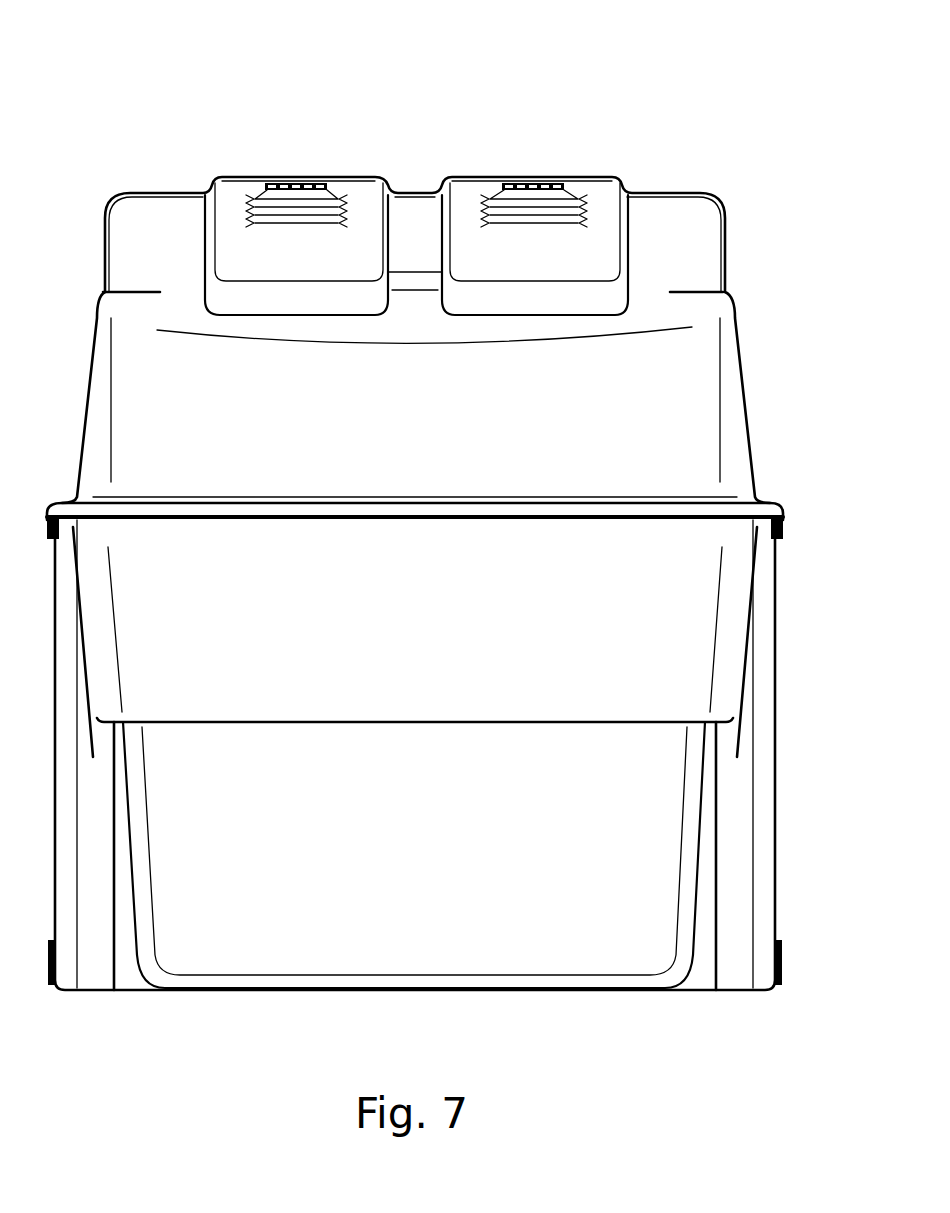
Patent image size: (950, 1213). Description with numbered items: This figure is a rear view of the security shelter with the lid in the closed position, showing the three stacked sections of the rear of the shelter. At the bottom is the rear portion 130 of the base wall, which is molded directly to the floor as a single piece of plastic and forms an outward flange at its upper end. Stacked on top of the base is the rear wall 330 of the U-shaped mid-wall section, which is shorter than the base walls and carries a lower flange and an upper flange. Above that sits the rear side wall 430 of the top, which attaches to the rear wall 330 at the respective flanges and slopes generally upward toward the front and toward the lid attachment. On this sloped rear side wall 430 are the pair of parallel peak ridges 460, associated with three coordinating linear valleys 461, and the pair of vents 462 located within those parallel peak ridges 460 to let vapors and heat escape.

The rear portion of the base wall 130 is at (375, 872).
The rear wall of the mid-wall section 330 is at (480, 575).
The rear side wall of the top 430 is at (415, 392).
The parallel peak ridges 460 is at (493, 260).
The linear valleys 461 is at (165, 222).
The vents 462 is at (583, 210).